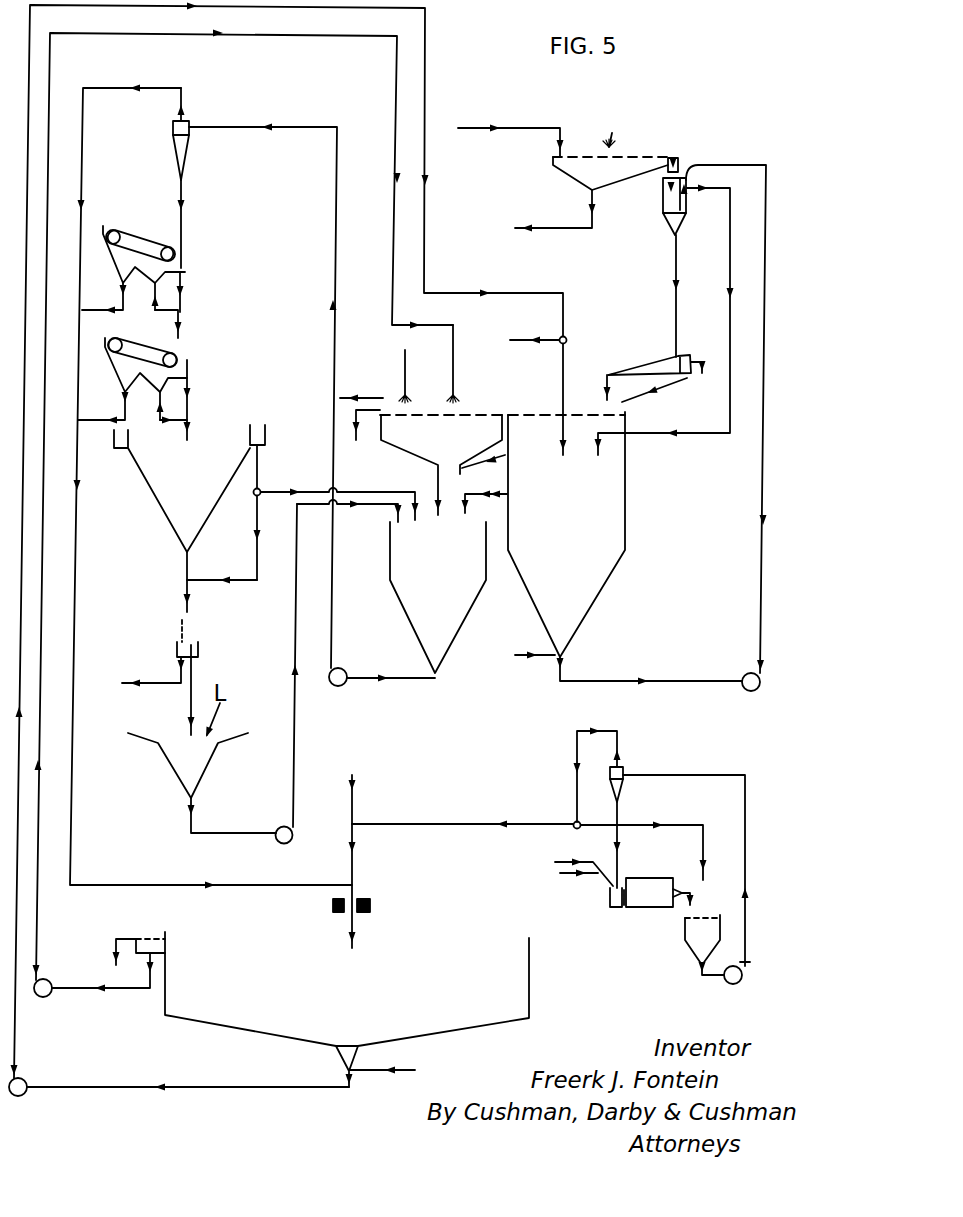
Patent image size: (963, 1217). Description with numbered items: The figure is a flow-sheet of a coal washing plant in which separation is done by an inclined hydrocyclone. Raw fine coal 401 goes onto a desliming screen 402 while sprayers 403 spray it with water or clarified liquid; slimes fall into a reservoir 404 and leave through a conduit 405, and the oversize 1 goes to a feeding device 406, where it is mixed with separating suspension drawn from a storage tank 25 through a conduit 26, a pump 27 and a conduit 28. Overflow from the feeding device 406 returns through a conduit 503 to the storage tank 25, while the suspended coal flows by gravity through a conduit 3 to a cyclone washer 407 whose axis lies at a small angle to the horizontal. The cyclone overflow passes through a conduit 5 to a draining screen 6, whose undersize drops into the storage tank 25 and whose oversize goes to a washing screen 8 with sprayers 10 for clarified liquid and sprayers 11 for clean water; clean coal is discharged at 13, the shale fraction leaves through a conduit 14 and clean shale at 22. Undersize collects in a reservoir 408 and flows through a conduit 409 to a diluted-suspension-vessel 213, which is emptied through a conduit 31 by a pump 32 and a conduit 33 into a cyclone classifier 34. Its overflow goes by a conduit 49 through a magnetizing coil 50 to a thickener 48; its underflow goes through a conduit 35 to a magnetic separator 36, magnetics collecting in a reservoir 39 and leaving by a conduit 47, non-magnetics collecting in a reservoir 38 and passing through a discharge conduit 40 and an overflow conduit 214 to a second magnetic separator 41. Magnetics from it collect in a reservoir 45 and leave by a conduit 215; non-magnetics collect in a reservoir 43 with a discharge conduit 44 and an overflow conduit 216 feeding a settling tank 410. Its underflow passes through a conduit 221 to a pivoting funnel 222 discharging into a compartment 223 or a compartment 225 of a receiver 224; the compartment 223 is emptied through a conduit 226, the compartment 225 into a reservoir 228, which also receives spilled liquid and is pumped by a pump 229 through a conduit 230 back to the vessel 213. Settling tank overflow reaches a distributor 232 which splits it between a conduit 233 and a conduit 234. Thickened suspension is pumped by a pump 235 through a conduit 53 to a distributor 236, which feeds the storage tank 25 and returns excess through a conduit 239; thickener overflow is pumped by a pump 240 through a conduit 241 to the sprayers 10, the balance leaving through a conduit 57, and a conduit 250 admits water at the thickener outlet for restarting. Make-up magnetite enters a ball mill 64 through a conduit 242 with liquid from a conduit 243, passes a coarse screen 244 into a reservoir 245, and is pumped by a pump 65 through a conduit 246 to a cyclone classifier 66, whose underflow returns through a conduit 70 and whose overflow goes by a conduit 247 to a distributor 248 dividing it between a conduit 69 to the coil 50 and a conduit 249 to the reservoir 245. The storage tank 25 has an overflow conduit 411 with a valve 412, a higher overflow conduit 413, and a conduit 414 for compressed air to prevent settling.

The oversize 1 is at (652, 152).
The conduit 3 is at (672, 272).
The conduit 5 is at (676, 380).
The draining screen 6 is at (518, 411).
The washing screen 8 is at (471, 411).
The sprayers 10 is at (442, 364).
The sprayers 11 is at (414, 376).
The clean coal discharge 13 is at (361, 436).
The conduit 14 is at (606, 390).
The clean shale discharge 22 is at (361, 384).
The storage tank 25 is at (566, 534).
The conduit 26 is at (600, 681).
The pump 27 is at (745, 676).
The conduit 28 is at (763, 494).
The conduit 31 is at (419, 680).
The pump 32 is at (344, 684).
The conduit 33 is at (240, 128).
The cyclone classifier 34 is at (181, 151).
The conduit 35 is at (185, 188).
The magnetic separator 36 is at (140, 233).
The reservoir 38 is at (141, 296).
The reservoir 39 is at (118, 268).
The discharge conduit 40 is at (166, 311).
The magnetic separator 41 is at (142, 353).
The reservoir 43 is at (152, 384).
The discharge conduit 44 is at (167, 421).
The reservoir 45 is at (118, 385).
The conduit 47 is at (102, 308).
The thickener 48 is at (168, 993).
The conduit 49 is at (83, 178).
The magnetizing coil 50 is at (373, 905).
The conduit 53 is at (425, 242).
The conduit 57 is at (120, 938).
The ball mill 64 is at (652, 892).
The pump 65 is at (729, 983).
The cyclone classifier 66 is at (621, 786).
The conduit 69 is at (450, 825).
The conduit 70 is at (619, 843).
The diluted-suspension-vessel 213 is at (438, 597).
The overflow conduit 214 is at (183, 288).
The conduit 215 is at (90, 422).
The overflow conduit 216 is at (189, 390).
The conduit 221 is at (184, 571).
The pivoting funnel 222 is at (195, 638).
The compartment 223 is at (176, 645).
The receiver 224 is at (199, 658).
The compartment 225 is at (198, 646).
The conduit 226 is at (151, 684).
The reservoir 228 is at (188, 765).
The pump 229 is at (280, 828).
The conduit 230 is at (292, 764).
The distributor 232 is at (262, 491).
The conduit 233 is at (363, 501).
The conduit 234 is at (259, 578).
The pump 235 is at (26, 1084).
The distributor 236 is at (567, 339).
The conduit 239 is at (509, 340).
The pump 240 is at (50, 983).
The conduit 241 is at (38, 900).
The conduit 242 is at (570, 889).
The conduit 243 is at (560, 856).
The coarse screen 244 is at (685, 918).
The reservoir 245 is at (701, 940).
The conduit 246 is at (686, 775).
The conduit 247 is at (619, 742).
The distributor 248 is at (573, 822).
The conduit 249 is at (678, 826).
The conduit 250 is at (405, 1070).
The raw fine coal 401 is at (469, 128).
The desliming screen 402 is at (577, 157).
The sprayers 403 is at (631, 131).
The reservoir 404 is at (610, 173).
The conduit 405 is at (539, 228).
The feeding device 406 is at (661, 201).
The cyclone washer 407 is at (648, 369).
The reservoir 408 is at (441, 465).
The conduit 409 is at (437, 499).
The settling tank 410 is at (189, 488).
The overflow conduit 411 is at (468, 498).
The valve 412 is at (509, 494).
The overflow conduit 413 is at (504, 456).
The conduit 414 is at (525, 657).
The conduit 503 is at (730, 232).